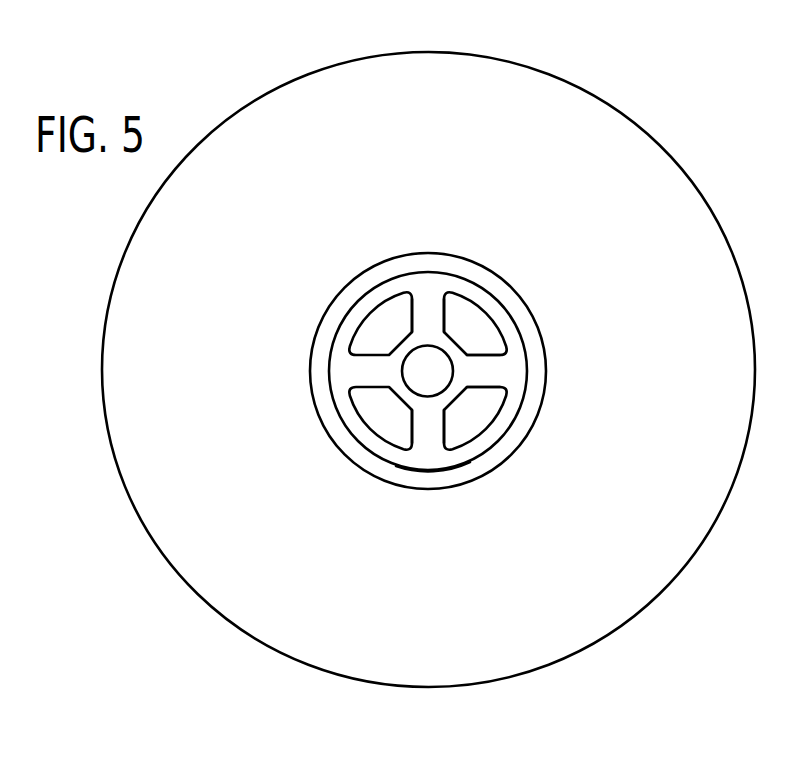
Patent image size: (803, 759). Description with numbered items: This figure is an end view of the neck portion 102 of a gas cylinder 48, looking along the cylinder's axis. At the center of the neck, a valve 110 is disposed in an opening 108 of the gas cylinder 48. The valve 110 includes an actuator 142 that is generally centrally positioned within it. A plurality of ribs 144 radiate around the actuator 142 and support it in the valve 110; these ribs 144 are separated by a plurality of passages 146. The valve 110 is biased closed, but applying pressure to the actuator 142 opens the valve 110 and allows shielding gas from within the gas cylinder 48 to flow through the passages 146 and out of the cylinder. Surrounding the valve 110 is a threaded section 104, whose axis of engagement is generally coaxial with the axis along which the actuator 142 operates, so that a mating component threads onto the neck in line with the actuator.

The gas cylinder 48 is at (557, 73).
The neck portion 102 is at (431, 276).
The threaded section 104 is at (528, 417).
The opening 108 is at (448, 467).
The valve 110 is at (494, 372).
The actuator 142 is at (402, 371).
The ribs 144 is at (428, 298).
The passages 146 is at (377, 327).